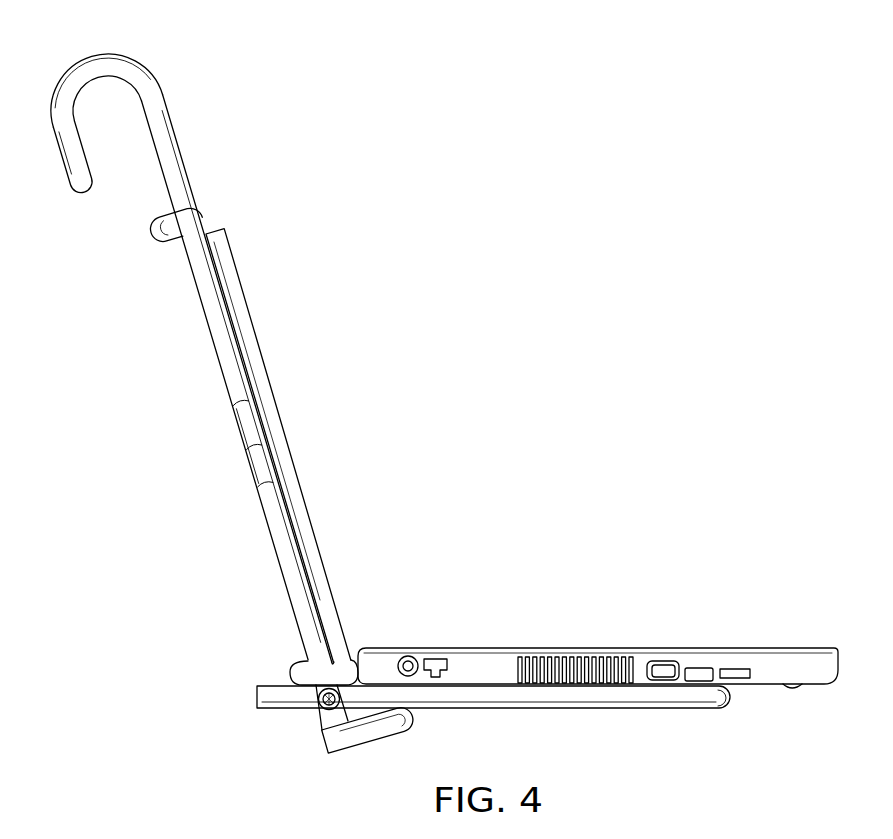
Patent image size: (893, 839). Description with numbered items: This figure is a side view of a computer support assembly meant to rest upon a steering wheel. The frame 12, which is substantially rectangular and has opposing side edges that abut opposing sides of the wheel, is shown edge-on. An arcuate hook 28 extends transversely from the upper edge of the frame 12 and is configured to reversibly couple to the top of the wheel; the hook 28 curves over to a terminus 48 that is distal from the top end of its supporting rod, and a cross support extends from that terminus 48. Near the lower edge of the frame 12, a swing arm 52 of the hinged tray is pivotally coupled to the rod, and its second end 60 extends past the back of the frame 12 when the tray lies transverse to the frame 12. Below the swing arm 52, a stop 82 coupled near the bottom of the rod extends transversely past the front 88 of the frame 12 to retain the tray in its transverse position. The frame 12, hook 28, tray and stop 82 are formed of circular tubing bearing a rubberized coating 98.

The frame 12 is at (261, 514).
The hook 28 is at (52, 98).
The terminus 48 is at (85, 206).
The swing arm 52 is at (579, 711).
The second end 60 is at (248, 695).
The stop 82 is at (394, 736).
The front 88 is at (204, 204).
The rubberized coating 98 is at (467, 715).